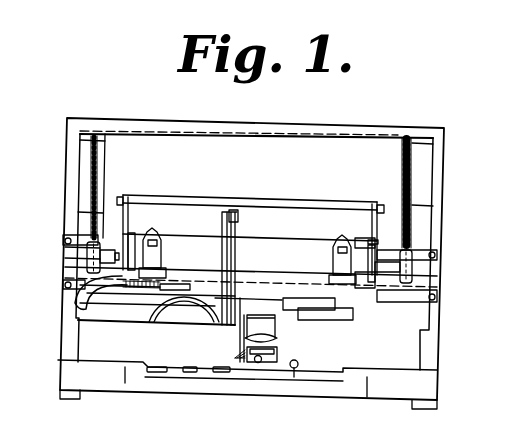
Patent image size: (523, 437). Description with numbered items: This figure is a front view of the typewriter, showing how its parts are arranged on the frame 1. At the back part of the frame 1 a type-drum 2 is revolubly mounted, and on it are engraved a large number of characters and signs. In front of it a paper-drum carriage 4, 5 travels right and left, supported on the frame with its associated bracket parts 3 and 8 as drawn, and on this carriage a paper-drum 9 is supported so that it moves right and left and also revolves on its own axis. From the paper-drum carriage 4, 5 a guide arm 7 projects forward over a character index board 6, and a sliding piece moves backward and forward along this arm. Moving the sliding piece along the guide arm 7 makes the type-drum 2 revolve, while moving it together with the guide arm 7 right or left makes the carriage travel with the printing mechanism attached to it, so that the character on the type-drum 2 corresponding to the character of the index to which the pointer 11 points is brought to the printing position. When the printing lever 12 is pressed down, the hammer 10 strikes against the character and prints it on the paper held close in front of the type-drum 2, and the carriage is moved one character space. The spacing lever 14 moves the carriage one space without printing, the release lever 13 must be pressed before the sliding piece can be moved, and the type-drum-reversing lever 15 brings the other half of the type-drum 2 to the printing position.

The frame 1 is at (66, 160).
The type-drum 2 is at (255, 191).
The bearing bracket 3 is at (75, 238).
The paper-drum carriage 4 is at (75, 263).
The paper-drum carriage 5 is at (168, 292).
The character index board 6 is at (251, 295).
The guide arm 7 is at (278, 328).
The roller unit 8 is at (278, 342).
The paper-drum 9 is at (250, 235).
The hammer 10 is at (238, 216).
The pointer 11 is at (238, 356).
The printing lever 12 is at (158, 373).
The release lever 13 is at (190, 373).
The spacing lever 14 is at (222, 373).
The type-drum-reversing lever 15 is at (295, 370).